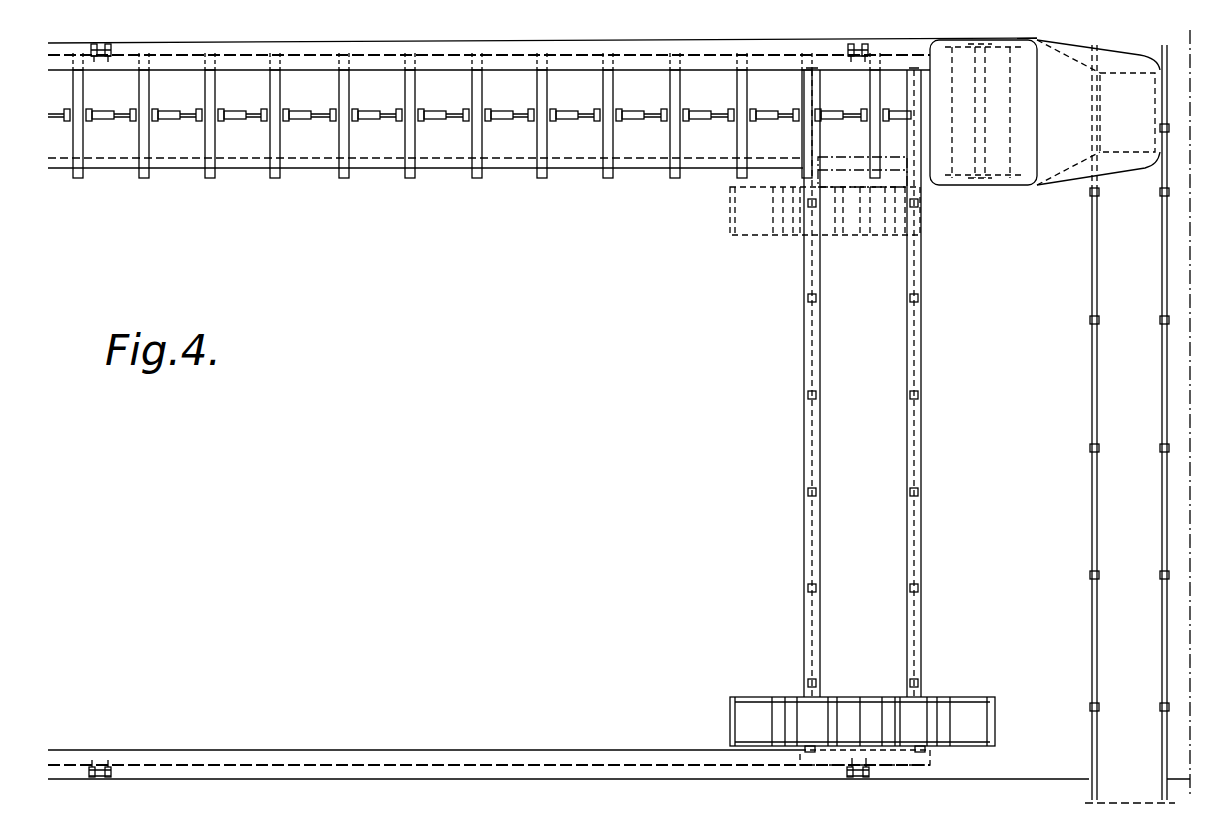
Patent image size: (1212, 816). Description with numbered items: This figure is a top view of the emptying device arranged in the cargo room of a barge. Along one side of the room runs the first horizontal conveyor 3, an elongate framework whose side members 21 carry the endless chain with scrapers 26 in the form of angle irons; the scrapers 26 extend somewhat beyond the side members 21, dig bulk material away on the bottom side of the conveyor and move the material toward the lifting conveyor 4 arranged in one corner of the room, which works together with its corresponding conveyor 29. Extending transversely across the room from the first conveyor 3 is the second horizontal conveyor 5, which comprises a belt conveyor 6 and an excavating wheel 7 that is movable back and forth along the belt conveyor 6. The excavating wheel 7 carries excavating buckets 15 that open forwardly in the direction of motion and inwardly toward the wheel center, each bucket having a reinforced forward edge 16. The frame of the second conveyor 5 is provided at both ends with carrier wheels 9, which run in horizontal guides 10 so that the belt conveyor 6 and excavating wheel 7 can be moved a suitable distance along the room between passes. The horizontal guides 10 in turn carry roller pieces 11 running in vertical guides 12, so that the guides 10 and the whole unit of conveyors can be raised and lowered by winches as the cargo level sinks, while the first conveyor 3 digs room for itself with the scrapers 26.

The first horizontal conveyor 3 is at (255, 165).
The lifting conveyor 4 is at (1052, 163).
The second horizontal conveyor 5 is at (808, 550).
The belt conveyor 6 is at (838, 457).
The excavating wheel 7 is at (822, 700).
The carrier wheels 9 is at (930, 755).
The horizontal guides 10 is at (323, 60).
The roller pieces 11 is at (108, 762).
The vertical guides 12 is at (90, 770).
The excavating buckets 15 is at (742, 702).
The reinforced forward edge 16 is at (733, 730).
The side members 21 is at (513, 162).
The scrapers 26 is at (410, 175).
The conveyor 29 is at (1120, 393).